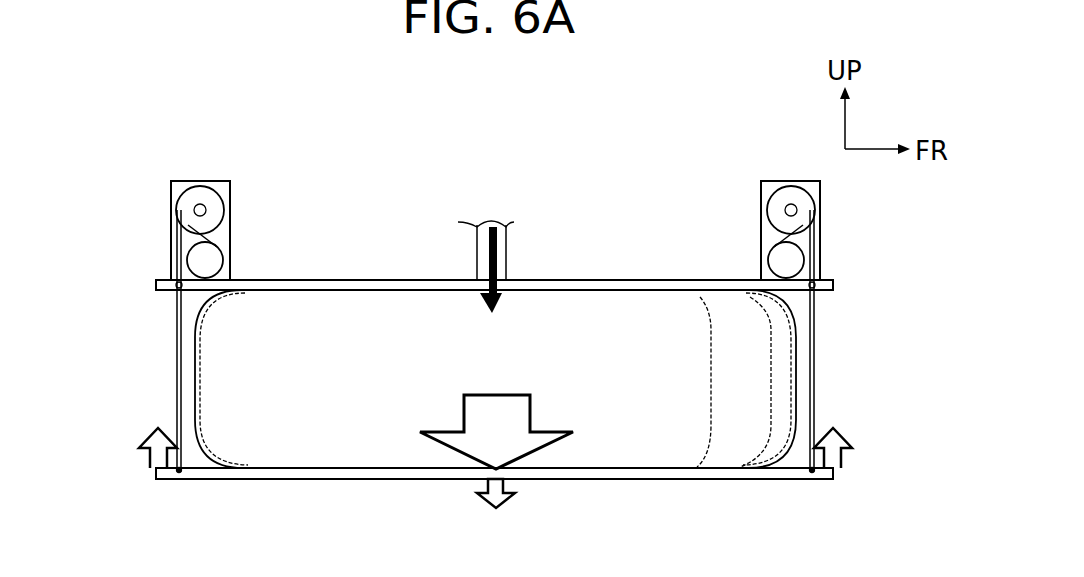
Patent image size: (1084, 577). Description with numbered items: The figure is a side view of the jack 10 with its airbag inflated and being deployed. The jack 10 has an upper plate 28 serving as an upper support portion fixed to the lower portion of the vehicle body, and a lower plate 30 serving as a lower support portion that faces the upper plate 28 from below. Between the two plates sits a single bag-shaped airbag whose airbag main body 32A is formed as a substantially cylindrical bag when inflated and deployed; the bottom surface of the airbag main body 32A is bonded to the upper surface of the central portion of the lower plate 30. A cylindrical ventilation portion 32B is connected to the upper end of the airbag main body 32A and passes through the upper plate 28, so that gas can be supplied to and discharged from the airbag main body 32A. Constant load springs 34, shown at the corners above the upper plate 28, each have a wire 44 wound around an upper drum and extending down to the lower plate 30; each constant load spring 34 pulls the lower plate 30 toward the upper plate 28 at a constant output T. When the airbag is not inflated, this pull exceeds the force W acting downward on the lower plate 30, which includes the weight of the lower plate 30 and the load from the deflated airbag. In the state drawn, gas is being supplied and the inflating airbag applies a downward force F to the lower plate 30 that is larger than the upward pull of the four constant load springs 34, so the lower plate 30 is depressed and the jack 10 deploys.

The jack 10 is at (442, 128).
The upper plate 28 is at (300, 279).
The lower plate 30 is at (309, 481).
The constant load spring 34 is at (191, 180).
The wire 44 is at (176, 383).
The ventilation portion 32B is at (507, 247).
The airbag main body 32A is at (772, 460).
The downward force F is at (463, 408).
The force acting downward W is at (508, 487).
The constant output T is at (148, 458).